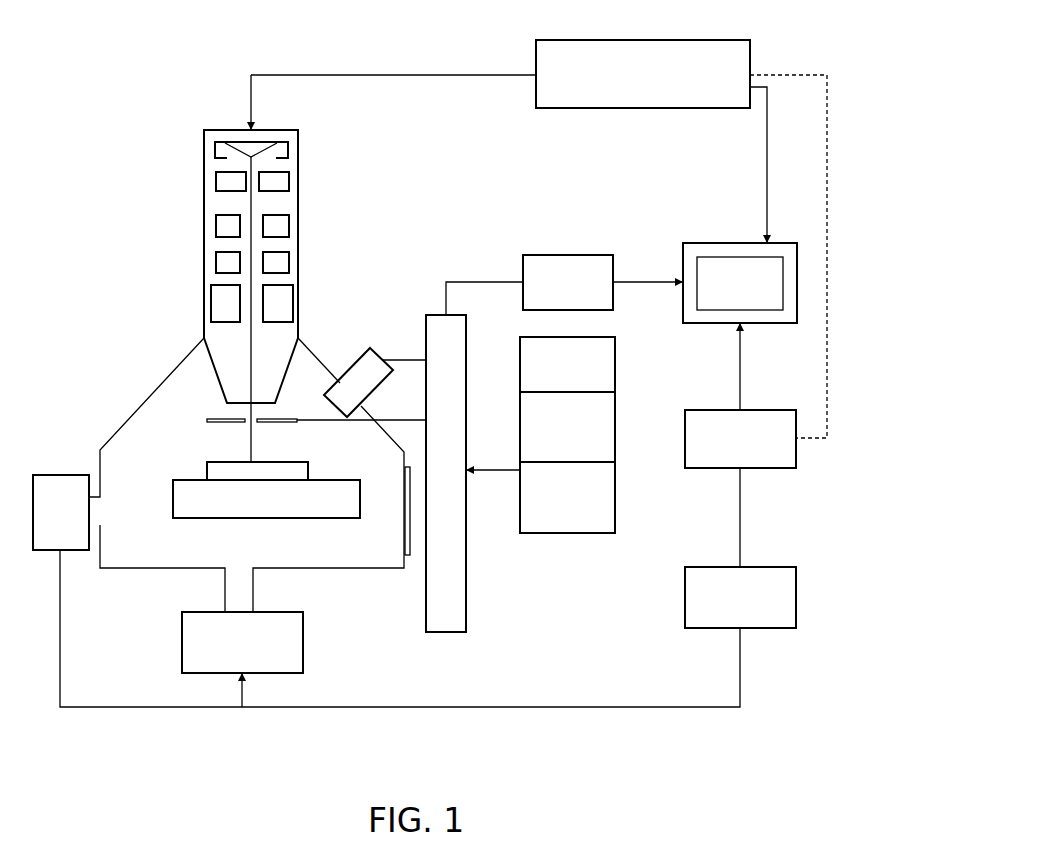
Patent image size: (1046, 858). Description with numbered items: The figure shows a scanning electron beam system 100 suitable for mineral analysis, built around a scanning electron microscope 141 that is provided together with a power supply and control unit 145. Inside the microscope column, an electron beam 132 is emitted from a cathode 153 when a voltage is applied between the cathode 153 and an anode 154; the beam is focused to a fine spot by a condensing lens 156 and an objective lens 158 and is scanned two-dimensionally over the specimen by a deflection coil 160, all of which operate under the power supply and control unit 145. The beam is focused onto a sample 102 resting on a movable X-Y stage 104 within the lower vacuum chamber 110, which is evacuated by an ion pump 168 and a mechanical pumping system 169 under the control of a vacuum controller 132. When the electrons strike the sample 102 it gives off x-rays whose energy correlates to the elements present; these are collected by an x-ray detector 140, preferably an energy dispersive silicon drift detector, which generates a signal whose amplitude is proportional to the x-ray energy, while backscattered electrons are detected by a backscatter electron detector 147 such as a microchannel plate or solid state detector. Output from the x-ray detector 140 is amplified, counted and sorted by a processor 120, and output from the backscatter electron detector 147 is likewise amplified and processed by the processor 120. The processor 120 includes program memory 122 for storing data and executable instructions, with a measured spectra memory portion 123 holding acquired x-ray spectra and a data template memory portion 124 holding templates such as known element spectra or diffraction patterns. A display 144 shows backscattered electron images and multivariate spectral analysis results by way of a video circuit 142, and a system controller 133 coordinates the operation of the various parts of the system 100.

The scanning electron beam system 100 is at (165, 58).
The sample 102 is at (227, 462).
The movable X-Y stage 104 is at (303, 513).
The vacuum chamber 110 is at (141, 562).
The processor 120 is at (430, 313).
The program memory 122 is at (612, 362).
The measured spectra memory portion 123 is at (612, 412).
The data template memory portion 124 is at (612, 493).
The electron beam / vacuum controller 132 is at (253, 452).
The system controller 133 is at (752, 408).
The x-ray detector 140 is at (370, 347).
The scanning electron microscope 141 is at (286, 121).
The video circuit 142 is at (590, 255).
The display 144 is at (740, 283).
The power supply and control unit 145 is at (718, 40).
The backscatter electron detector 147 is at (213, 417).
The cathode 153 is at (243, 140).
The anode 154 is at (217, 177).
The condensing lens 156 is at (217, 218).
The objective lens 158 is at (213, 292).
The deflection coil 160 is at (217, 254).
The ion pump 168 is at (61, 512).
The mechanical pumping system 169 is at (182, 640).